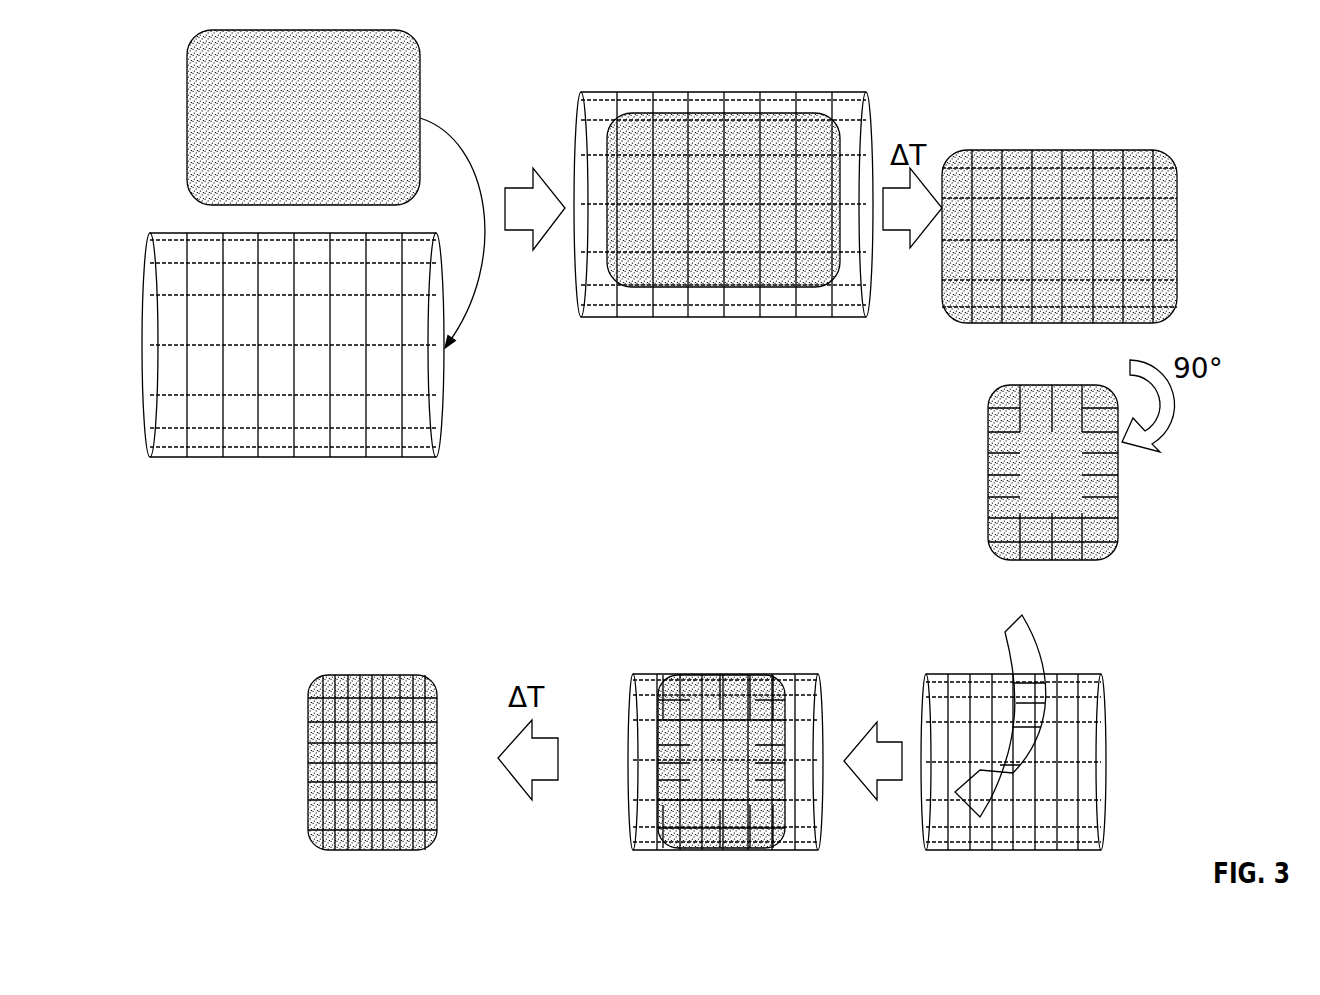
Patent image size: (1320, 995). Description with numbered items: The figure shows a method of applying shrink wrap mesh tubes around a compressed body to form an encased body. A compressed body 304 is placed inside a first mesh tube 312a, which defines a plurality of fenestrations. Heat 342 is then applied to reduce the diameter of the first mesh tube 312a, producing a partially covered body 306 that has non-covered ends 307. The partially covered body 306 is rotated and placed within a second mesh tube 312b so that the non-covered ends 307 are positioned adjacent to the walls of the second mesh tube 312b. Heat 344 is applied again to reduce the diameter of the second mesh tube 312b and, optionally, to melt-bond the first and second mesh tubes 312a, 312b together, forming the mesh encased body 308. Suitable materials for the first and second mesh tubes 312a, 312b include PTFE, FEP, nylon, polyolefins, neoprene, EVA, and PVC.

The compressed body 304 is at (409, 66).
The partially covered body 306 is at (738, 270).
The non-covered ends 307 is at (1068, 483).
The mesh encased body 308 is at (352, 695).
The first mesh tube 312a is at (383, 415).
The second mesh tube 312b is at (1103, 770).
The heat 342 is at (908, 130).
The heat 344 is at (530, 662).